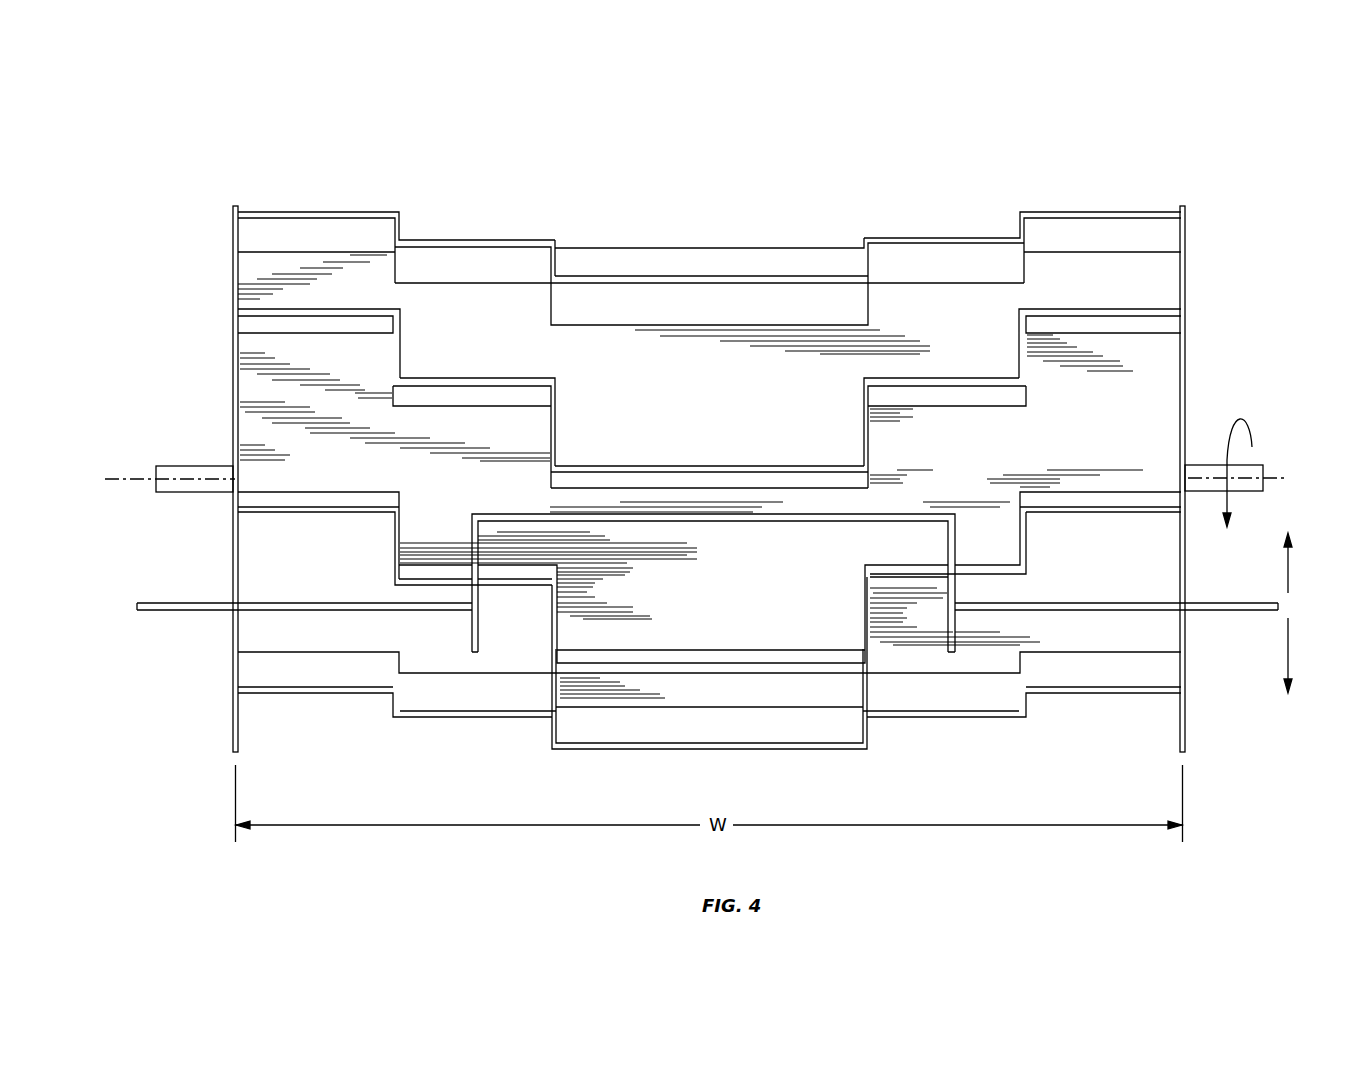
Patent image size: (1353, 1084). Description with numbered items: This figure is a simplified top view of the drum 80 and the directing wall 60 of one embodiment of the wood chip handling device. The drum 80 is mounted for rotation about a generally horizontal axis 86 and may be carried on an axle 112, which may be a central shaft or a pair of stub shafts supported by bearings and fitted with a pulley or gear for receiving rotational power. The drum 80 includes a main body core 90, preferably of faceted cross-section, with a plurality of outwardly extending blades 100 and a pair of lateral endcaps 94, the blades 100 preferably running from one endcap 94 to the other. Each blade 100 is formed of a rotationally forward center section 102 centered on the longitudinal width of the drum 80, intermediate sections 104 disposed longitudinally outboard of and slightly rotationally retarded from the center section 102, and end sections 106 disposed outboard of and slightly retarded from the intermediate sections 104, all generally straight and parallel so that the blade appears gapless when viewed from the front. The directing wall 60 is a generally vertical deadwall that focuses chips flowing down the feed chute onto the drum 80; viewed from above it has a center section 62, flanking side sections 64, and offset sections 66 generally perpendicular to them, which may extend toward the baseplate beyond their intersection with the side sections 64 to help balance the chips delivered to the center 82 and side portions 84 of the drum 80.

The directing wall 60 is at (1212, 609).
The center section 62 is at (775, 523).
The side sections 64 is at (302, 611).
The offset sections 66 is at (478, 565).
The drum 80 is at (585, 148).
The center 82 is at (700, 222).
The side portions 84 is at (314, 185).
The horizontal axis 86 is at (130, 477).
The main body core 90 is at (497, 363).
The lateral endcaps 94 is at (233, 258).
The blades 100 is at (757, 477).
The center section 102 is at (677, 466).
The intermediate sections 104 is at (510, 378).
The end sections 106 is at (310, 309).
The axle 112 is at (1250, 448).